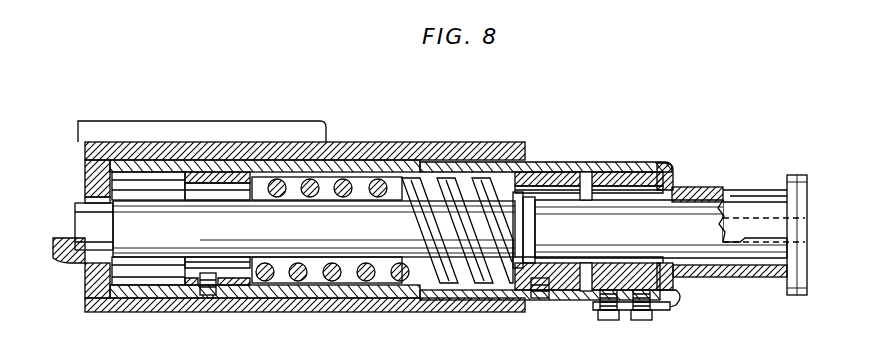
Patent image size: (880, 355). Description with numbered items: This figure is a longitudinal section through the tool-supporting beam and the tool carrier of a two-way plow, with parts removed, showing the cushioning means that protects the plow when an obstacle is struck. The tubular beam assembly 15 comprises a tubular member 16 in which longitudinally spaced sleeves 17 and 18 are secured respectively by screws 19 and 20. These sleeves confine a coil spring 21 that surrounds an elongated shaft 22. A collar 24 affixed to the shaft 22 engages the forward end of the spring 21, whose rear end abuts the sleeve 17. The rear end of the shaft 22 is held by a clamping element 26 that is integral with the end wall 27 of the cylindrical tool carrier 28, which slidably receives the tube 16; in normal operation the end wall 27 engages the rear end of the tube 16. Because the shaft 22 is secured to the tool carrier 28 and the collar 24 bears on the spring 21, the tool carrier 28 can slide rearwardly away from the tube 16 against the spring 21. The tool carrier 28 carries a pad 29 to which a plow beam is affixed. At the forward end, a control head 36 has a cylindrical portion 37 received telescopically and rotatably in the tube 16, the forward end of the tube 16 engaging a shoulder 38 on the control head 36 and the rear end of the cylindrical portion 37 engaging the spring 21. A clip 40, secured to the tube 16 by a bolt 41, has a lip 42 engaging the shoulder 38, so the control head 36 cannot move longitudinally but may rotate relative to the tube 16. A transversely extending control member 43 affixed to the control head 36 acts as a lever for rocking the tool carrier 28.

The tubular beam assembly 15 is at (628, 142).
The tubular member 16 is at (534, 162).
The sleeve 17 is at (240, 270).
The sleeve 18 is at (585, 292).
The screw 19 is at (208, 296).
The screw 20 is at (544, 300).
The coil spring 21 is at (368, 286).
The shaft 22 is at (300, 235).
The collar 24 is at (536, 222).
The clamping element 26 is at (63, 264).
The end wall 27 is at (84, 186).
The tool carrier 28 is at (163, 312).
The pad 29 is at (288, 121).
The control head 36 is at (692, 188).
The cylindrical portion 37 is at (606, 164).
The shoulder 38 is at (672, 164).
The clip 40 is at (660, 311).
The bolt 41 is at (609, 320).
The lip 42 is at (680, 300).
The control member 43 is at (797, 296).